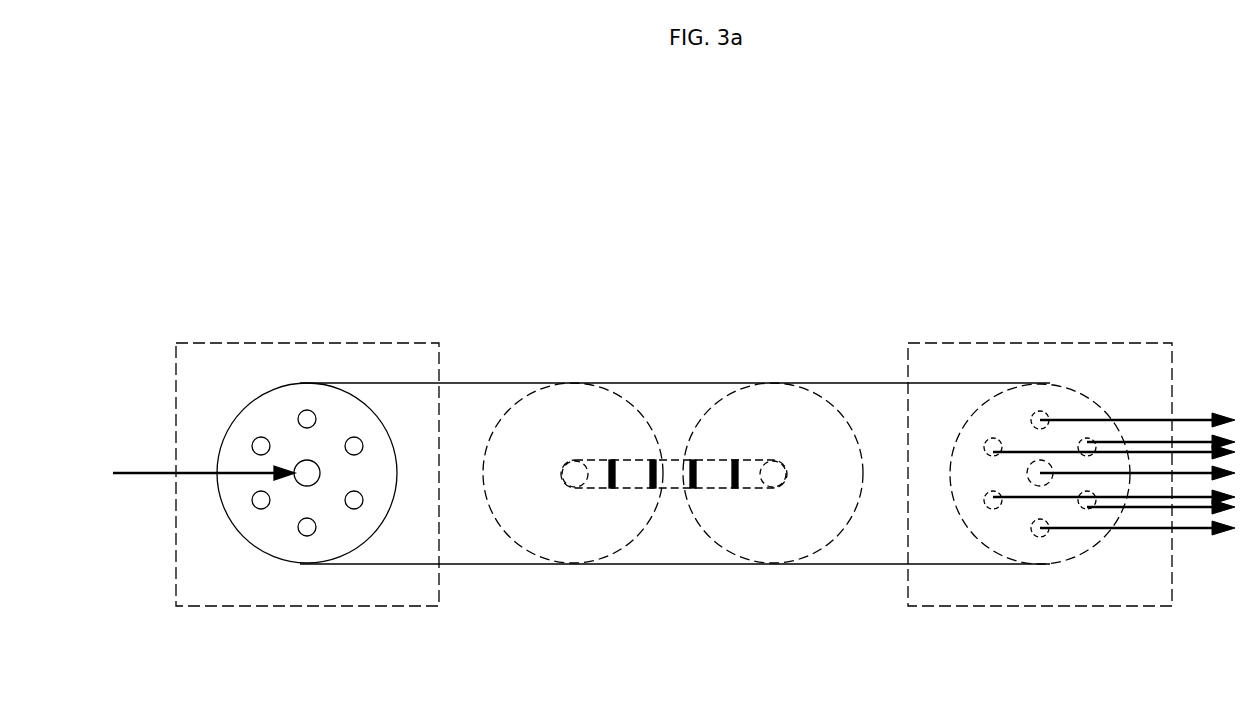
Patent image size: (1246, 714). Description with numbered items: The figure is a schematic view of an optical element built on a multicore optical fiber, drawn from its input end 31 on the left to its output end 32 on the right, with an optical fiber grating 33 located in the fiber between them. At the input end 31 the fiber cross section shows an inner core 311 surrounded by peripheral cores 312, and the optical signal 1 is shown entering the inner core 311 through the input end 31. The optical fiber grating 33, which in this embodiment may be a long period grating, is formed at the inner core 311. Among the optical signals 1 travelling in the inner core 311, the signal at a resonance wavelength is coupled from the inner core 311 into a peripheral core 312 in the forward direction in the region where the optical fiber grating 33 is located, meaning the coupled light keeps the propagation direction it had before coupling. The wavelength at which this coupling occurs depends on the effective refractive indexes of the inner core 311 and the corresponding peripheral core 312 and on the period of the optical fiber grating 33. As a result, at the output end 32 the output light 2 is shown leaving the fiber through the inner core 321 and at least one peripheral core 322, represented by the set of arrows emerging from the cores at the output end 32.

The optical signal 1 is at (144, 472).
The output light 2 is at (1155, 508).
The input end 31 is at (388, 342).
The inner core 311 is at (317, 462).
The peripheral core 312 is at (307, 410).
The output end 32 is at (1122, 342).
The inner core 321 is at (1027, 473).
The peripheral core 322 is at (1040, 411).
The optical fiber grating 33 is at (773, 368).